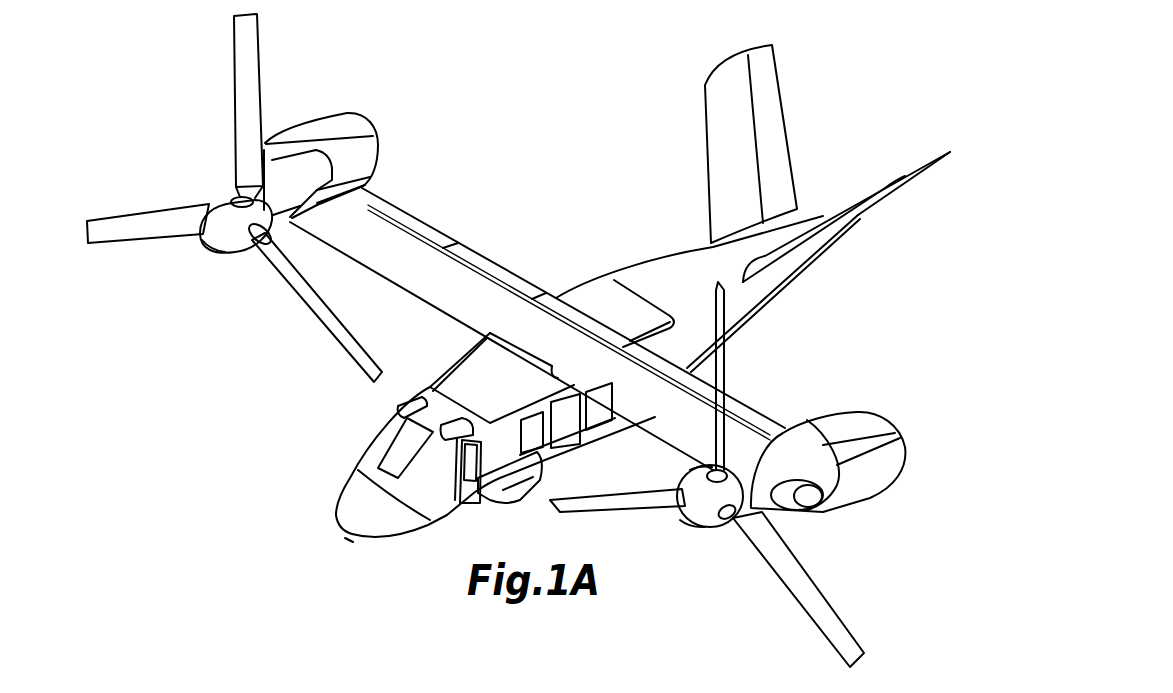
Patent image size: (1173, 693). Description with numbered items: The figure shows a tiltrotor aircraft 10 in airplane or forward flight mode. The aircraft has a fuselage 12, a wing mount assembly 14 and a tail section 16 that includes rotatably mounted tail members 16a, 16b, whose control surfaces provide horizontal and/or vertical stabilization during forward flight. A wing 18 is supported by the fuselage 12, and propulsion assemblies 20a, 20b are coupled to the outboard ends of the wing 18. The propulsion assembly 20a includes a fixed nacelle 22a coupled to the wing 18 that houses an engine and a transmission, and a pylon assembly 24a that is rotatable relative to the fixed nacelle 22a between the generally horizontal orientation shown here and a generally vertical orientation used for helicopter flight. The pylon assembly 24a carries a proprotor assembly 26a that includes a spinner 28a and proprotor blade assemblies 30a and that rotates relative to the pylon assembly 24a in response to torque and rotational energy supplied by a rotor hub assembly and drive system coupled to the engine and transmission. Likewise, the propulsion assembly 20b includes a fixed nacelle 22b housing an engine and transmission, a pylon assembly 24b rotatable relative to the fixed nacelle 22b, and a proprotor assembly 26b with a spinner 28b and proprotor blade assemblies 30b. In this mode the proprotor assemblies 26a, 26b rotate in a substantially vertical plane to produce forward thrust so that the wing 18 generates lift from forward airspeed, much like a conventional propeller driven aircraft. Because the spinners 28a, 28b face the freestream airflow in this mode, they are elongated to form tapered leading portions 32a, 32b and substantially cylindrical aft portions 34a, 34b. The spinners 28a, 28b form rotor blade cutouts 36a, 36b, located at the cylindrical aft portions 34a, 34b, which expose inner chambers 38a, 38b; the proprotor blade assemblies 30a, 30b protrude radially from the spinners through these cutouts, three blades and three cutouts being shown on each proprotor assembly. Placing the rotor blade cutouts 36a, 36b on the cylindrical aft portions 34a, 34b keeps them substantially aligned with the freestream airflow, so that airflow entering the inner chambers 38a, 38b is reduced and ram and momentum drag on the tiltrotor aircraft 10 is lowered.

The tiltrotor aircraft 10 is at (569, 152).
The fuselage 12 is at (690, 265).
The wing mount assembly 14 is at (583, 297).
The tail section 16 is at (835, 158).
The tail member 16a is at (932, 152).
The tail member 16b is at (770, 61).
The wing 18 is at (497, 296).
The propulsion assembly 20a is at (816, 423).
The propulsion assembly 20b is at (326, 130).
The fixed nacelle 22a is at (840, 410).
The fixed nacelle 22b is at (342, 113).
The pylon assembly 24a is at (758, 455).
The pylon assembly 24b is at (275, 183).
The proprotor assembly 26a is at (668, 517).
The proprotor assembly 26b is at (231, 125).
The spinner 28a is at (682, 527).
The spinner 28b is at (190, 242).
The proprotor blade assemblies 30a is at (833, 607).
The proprotor blade assemblies 30b is at (118, 222).
The tapered leading portion 32a is at (692, 533).
The tapered leading portion 32b is at (205, 247).
The cylindrical aft portion 34a is at (697, 490).
The cylindrical aft portion 34b is at (305, 228).
The rotor blade cutouts 36a is at (713, 533).
The rotor blade cutouts 36b is at (228, 200).
The inner chamber 38a is at (741, 480).
The inner chamber 38b is at (268, 248).